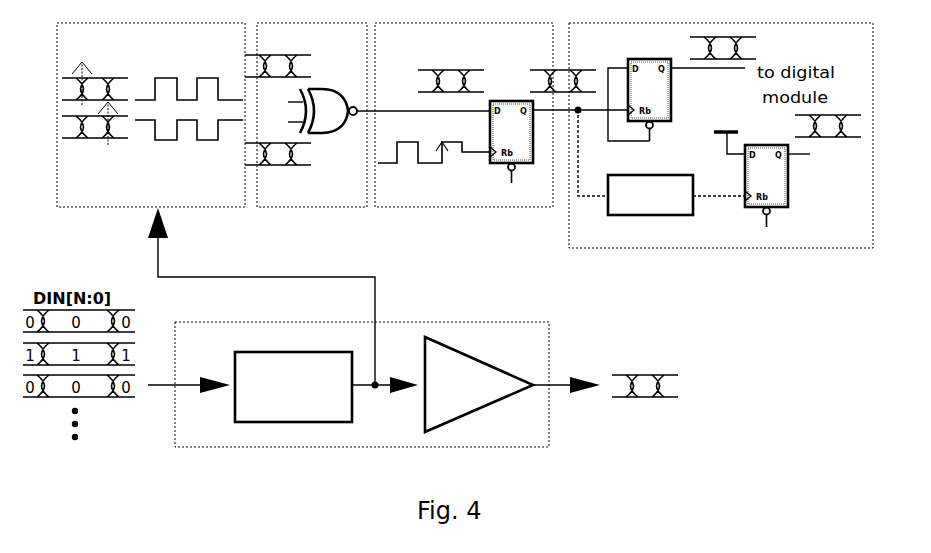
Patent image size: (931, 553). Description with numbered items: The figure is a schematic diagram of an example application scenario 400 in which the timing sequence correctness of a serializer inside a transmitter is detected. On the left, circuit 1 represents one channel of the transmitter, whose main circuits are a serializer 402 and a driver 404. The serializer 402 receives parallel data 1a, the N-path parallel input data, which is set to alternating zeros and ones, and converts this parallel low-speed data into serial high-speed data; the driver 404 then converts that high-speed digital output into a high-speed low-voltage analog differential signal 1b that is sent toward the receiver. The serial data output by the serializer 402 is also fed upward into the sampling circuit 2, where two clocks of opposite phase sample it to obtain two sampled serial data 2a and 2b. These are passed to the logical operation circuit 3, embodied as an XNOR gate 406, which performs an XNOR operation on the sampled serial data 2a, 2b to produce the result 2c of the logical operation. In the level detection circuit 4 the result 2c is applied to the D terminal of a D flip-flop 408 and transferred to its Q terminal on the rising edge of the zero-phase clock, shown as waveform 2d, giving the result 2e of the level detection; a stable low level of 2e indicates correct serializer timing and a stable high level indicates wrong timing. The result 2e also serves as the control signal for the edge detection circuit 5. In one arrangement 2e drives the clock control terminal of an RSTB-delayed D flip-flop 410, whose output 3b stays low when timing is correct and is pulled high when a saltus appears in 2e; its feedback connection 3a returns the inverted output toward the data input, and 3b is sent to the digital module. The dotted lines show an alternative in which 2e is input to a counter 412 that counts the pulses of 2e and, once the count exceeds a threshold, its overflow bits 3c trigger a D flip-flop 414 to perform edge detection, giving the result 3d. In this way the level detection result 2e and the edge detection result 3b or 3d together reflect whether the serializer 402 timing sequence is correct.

The circuit 1 is at (542, 312).
The data 1a is at (186, 375).
The high-speed low-voltage analog differential signal 1b is at (605, 372).
The sampling circuit 2 is at (113, 214).
The sampled serial data 2a is at (296, 102).
The sampled serial data 2b is at (296, 123).
The result of the logical operation 2c is at (423, 90).
The clock signal CK0 2d is at (434, 143).
The result of the level detection 2e is at (579, 102).
The logical operation circuit 3 is at (317, 214).
The feedback signal 3a is at (643, 111).
The result of the edge detection 3b is at (713, 64).
The overflow bits 3c is at (719, 184).
The result of the edge detection 3d is at (824, 139).
The level detection circuit 4 is at (452, 214).
The edge detection circuit 5 is at (693, 256).
The example application scenario 400 is at (797, 338).
The serializer 402 is at (262, 352).
The driver 404 is at (466, 354).
The XNOR gate 406 is at (319, 88).
The D flip-flop 408 is at (504, 99).
The D flip-flop 410 is at (637, 58).
The counter 412 is at (648, 216).
The D flip-flop 414 is at (787, 210).